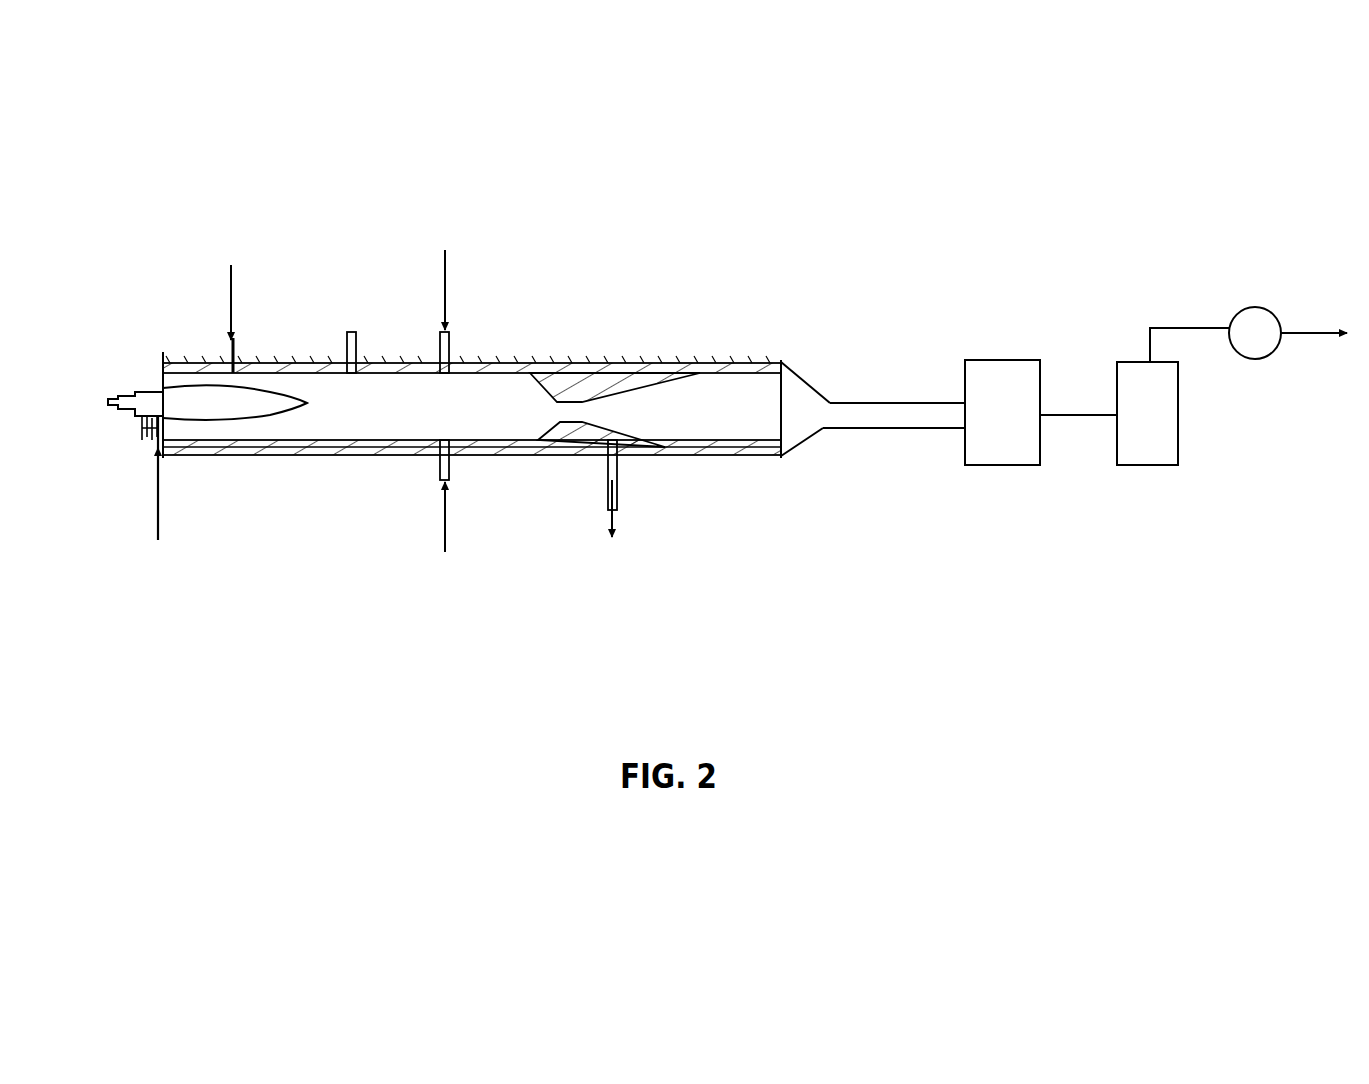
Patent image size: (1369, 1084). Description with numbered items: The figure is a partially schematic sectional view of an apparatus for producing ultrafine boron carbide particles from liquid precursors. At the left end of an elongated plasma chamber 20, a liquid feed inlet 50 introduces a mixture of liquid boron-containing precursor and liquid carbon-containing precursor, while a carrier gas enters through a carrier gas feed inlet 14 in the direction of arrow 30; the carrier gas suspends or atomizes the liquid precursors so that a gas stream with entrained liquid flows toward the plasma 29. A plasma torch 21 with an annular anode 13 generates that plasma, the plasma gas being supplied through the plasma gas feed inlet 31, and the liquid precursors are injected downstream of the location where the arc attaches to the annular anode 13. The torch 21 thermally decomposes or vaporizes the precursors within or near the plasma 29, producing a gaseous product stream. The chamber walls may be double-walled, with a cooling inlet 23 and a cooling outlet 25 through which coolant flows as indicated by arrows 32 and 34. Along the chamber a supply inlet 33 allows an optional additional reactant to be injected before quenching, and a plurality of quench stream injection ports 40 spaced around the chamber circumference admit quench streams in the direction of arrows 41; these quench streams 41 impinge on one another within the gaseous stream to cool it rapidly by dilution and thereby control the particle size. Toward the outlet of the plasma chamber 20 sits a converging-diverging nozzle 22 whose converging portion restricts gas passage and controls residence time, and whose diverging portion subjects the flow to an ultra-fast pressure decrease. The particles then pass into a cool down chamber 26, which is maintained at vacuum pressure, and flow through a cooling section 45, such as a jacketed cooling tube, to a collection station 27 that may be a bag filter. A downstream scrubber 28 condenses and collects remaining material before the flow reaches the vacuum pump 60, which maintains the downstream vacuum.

The annular anode 13 is at (148, 392).
The carrier gas feed inlet 14 is at (145, 440).
The plasma chamber 20 is at (564, 449).
The plasma torch 21 is at (173, 360).
The nozzle 22 is at (550, 392).
The cooling inlet 23 is at (238, 352).
The cooling outlet 25 is at (619, 467).
The cool down chamber 26 is at (727, 457).
The collection station 27 is at (1012, 421).
The scrubber 28 is at (1160, 424).
The plasma 29 is at (203, 413).
The arrow 30 is at (160, 492).
The plasma gas feed inlet 31 is at (117, 400).
The arrow 32 is at (232, 290).
The supply inlet 33 is at (356, 340).
The arrow 34 is at (609, 508).
The quench stream injection ports 40 is at (451, 343).
The quench streams 41 is at (443, 268).
The cooling section 45 is at (882, 401).
The liquid feed inlet 50 is at (142, 420).
The vacuum pump 60 is at (1251, 306).